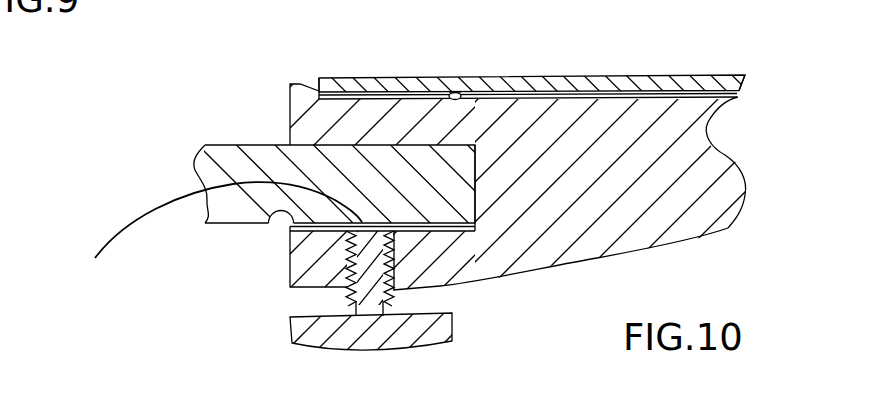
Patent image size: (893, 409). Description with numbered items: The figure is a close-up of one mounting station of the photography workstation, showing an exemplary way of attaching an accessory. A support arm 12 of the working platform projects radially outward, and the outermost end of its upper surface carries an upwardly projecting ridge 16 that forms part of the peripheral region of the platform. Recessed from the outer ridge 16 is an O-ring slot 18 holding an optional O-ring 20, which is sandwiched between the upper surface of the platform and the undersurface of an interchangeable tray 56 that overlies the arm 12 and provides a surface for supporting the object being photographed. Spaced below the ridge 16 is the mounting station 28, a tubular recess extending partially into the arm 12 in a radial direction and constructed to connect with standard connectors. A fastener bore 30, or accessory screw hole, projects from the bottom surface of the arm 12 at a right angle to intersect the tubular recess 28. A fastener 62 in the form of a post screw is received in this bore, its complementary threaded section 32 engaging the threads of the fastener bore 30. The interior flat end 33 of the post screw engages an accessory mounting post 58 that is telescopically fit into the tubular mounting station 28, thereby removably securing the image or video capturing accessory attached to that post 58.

The support arm 12 is at (673, 230).
The upwardly projecting ridge 16 is at (319, 91).
The O-ring slot 18 is at (443, 94).
The O-ring 20 is at (455, 93).
The mounting station 28 is at (267, 226).
The fastener bore 30 is at (353, 294).
The threaded section 32 is at (394, 280).
The interior flat end 33 is at (191, 240).
The interchangeable tray 56 is at (512, 82).
The accessory mounting post 58 is at (257, 154).
The fastener 62 is at (347, 349).